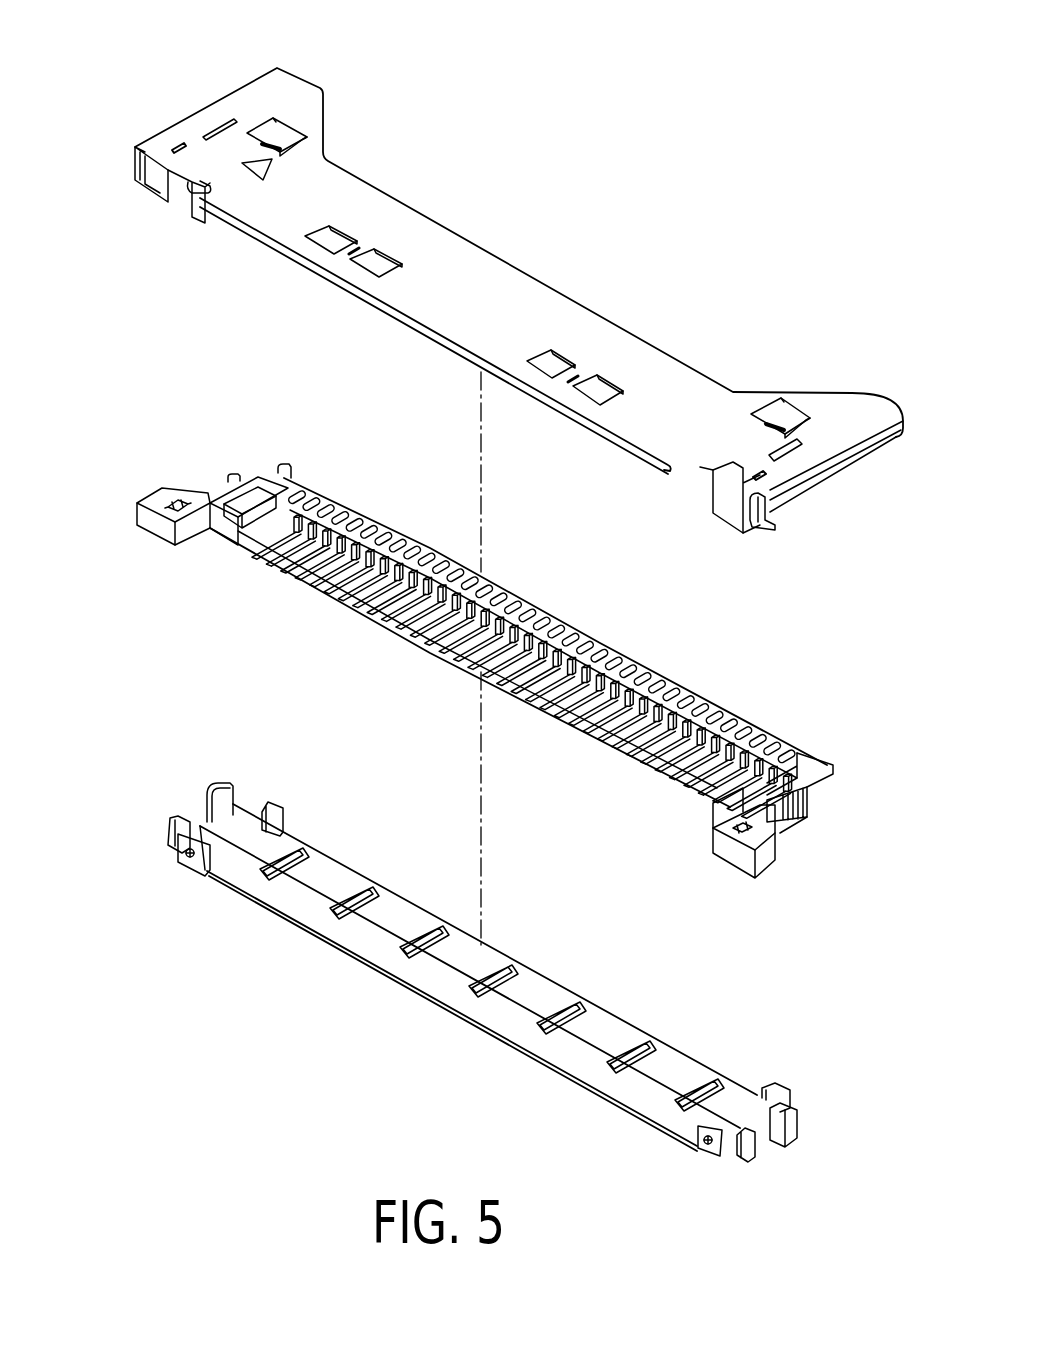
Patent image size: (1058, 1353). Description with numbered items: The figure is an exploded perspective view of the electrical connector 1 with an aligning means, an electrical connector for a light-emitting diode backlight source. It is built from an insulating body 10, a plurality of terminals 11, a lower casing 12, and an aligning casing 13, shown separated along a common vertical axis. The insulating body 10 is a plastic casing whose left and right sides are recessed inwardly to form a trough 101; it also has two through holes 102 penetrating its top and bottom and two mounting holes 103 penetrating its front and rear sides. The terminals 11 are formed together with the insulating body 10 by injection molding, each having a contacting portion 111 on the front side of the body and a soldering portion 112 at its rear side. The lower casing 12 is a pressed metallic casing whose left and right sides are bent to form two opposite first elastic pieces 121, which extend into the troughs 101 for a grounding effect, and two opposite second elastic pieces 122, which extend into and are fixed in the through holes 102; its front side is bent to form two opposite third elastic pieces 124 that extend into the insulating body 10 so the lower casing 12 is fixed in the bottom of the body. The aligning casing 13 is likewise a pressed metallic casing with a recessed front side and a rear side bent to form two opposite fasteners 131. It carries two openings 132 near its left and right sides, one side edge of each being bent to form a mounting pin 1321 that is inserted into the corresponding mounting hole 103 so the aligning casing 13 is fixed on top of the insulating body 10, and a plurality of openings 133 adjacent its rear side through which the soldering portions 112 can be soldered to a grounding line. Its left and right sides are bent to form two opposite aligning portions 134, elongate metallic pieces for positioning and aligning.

The electrical connector 1 is at (102, 175).
The insulating body 10 is at (205, 495).
The terminals 11 is at (359, 396).
The contacting portion 111 is at (336, 500).
The soldering portion 112 is at (281, 533).
The trough 101 is at (800, 822).
The through holes 102 is at (740, 846).
The mounting holes 103 is at (763, 762).
The lower casing 12 is at (245, 897).
The first elastic pieces 121 is at (793, 1117).
The second elastic pieces 122 is at (753, 1133).
The third elastic pieces 124 is at (773, 1088).
The aligning casing 13 is at (180, 120).
The fasteners 131 is at (732, 508).
The openings 132 is at (288, 128).
The mounting pin 1321 is at (275, 140).
The openings 133 is at (335, 240).
The aligning portions 134 is at (850, 460).